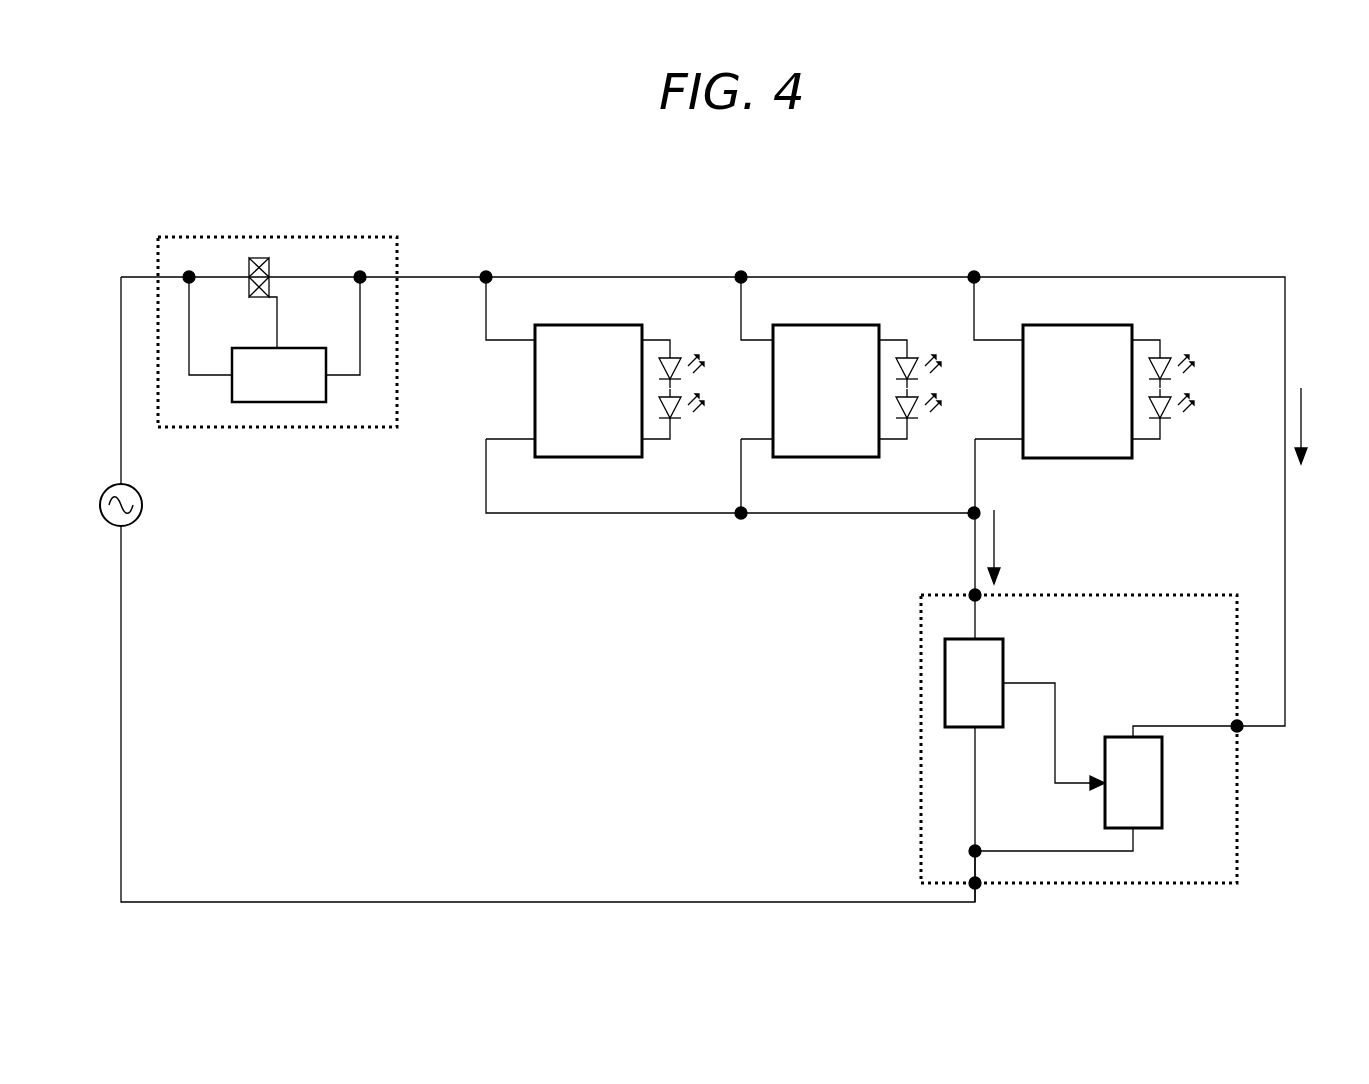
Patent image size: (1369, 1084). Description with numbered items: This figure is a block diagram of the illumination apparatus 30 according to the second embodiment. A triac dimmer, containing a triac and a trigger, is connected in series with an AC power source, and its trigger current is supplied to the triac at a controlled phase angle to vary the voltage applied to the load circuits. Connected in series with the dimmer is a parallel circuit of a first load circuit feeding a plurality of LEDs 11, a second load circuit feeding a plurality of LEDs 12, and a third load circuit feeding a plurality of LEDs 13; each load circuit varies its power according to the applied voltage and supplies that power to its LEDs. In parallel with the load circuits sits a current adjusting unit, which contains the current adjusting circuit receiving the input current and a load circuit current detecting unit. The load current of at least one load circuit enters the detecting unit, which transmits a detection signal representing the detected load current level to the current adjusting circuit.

The LEDs 11 is at (705, 389).
The LEDs 12 is at (942, 389).
The LEDs 13 is at (1195, 389).
The illumination apparatus 30 is at (958, 225).